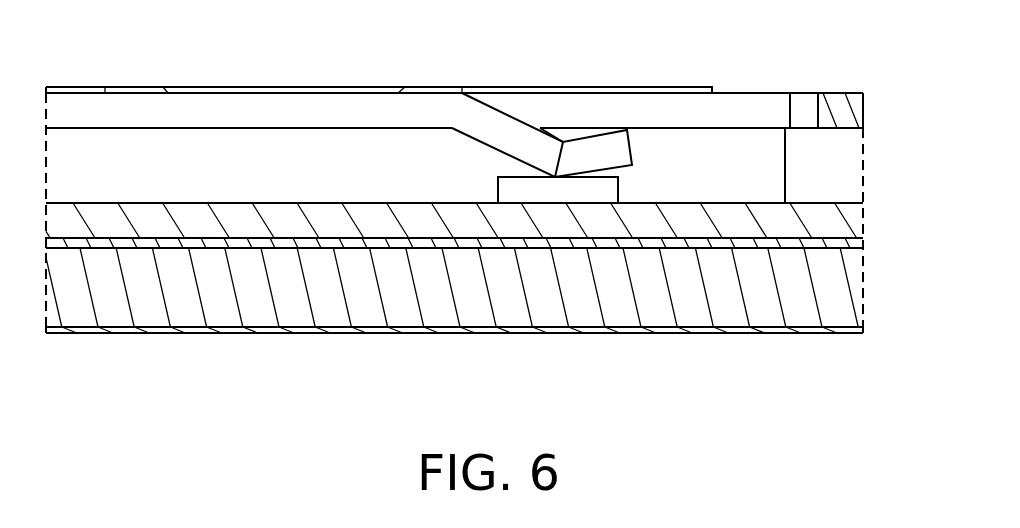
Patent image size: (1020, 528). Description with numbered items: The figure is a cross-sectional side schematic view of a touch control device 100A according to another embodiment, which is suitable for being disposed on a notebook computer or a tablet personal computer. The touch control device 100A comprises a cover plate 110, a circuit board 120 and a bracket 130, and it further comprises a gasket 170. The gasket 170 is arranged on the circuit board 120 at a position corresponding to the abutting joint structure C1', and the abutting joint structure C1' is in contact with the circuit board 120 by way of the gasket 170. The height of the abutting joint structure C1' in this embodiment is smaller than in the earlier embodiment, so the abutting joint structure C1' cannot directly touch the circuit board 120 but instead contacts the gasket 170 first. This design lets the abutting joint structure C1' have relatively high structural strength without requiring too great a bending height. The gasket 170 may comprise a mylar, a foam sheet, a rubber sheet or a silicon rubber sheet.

The touch control device 100A is at (880, 391).
The cover plate 110 is at (837, 287).
The circuit board 120 is at (837, 224).
The bracket 130 is at (837, 110).
The gasket 170 is at (593, 192).
The abutting joint structure C1' is at (576, 96).